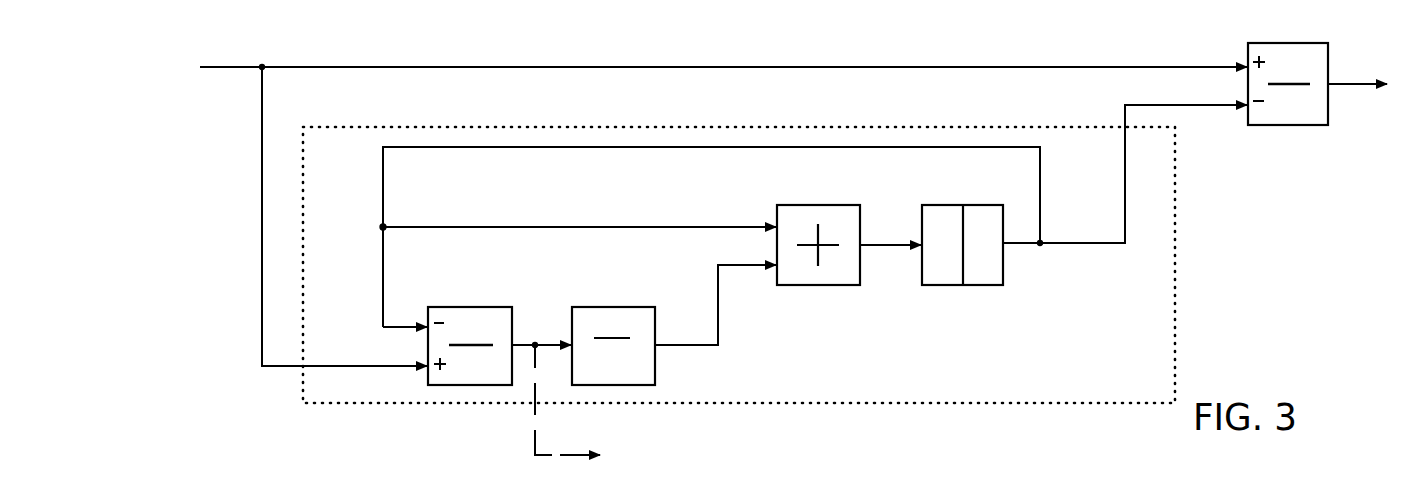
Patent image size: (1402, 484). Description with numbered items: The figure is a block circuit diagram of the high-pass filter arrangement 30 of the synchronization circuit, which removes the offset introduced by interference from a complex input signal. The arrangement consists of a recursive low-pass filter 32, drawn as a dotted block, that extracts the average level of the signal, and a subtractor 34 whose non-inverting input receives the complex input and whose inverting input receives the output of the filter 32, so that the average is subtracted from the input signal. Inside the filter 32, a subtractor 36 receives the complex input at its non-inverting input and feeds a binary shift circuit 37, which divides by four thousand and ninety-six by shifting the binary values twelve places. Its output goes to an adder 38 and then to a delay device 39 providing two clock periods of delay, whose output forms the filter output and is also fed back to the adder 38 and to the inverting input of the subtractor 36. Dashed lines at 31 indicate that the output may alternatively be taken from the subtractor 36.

The high-pass filter arrangement 30 is at (195, 298).
The alternative output 31 is at (600, 453).
The recursive low-pass filter 32 is at (345, 158).
The subtractor 34 is at (1258, 42).
The subtractor 36 is at (447, 306).
The binary shift circuit 37 is at (588, 306).
The adder 38 is at (792, 204).
The delay device 39 is at (936, 204).